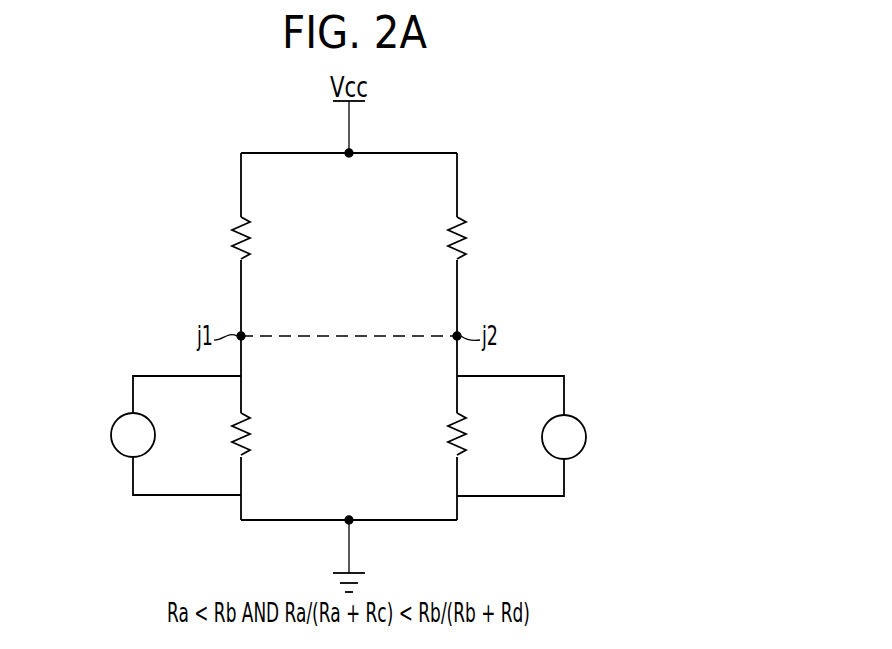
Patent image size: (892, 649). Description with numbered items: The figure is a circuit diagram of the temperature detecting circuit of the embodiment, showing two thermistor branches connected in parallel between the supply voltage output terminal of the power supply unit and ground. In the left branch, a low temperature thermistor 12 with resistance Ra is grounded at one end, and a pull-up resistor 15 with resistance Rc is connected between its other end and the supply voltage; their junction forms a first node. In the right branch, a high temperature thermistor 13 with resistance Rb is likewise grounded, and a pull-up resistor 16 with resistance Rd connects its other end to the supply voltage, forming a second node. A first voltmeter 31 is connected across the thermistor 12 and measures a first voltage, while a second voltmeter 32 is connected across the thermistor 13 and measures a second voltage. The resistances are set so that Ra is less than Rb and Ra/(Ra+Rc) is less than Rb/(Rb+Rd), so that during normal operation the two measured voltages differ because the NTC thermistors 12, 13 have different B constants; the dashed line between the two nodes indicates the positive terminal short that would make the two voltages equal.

The thermistor 12 is at (245, 415).
The thermistor 13 is at (453, 418).
The pull-up resistor 15 is at (245, 219).
The pull-up resistor 16 is at (453, 219).
The voltmeter 31 is at (111, 435).
The voltmeter 32 is at (586, 437).